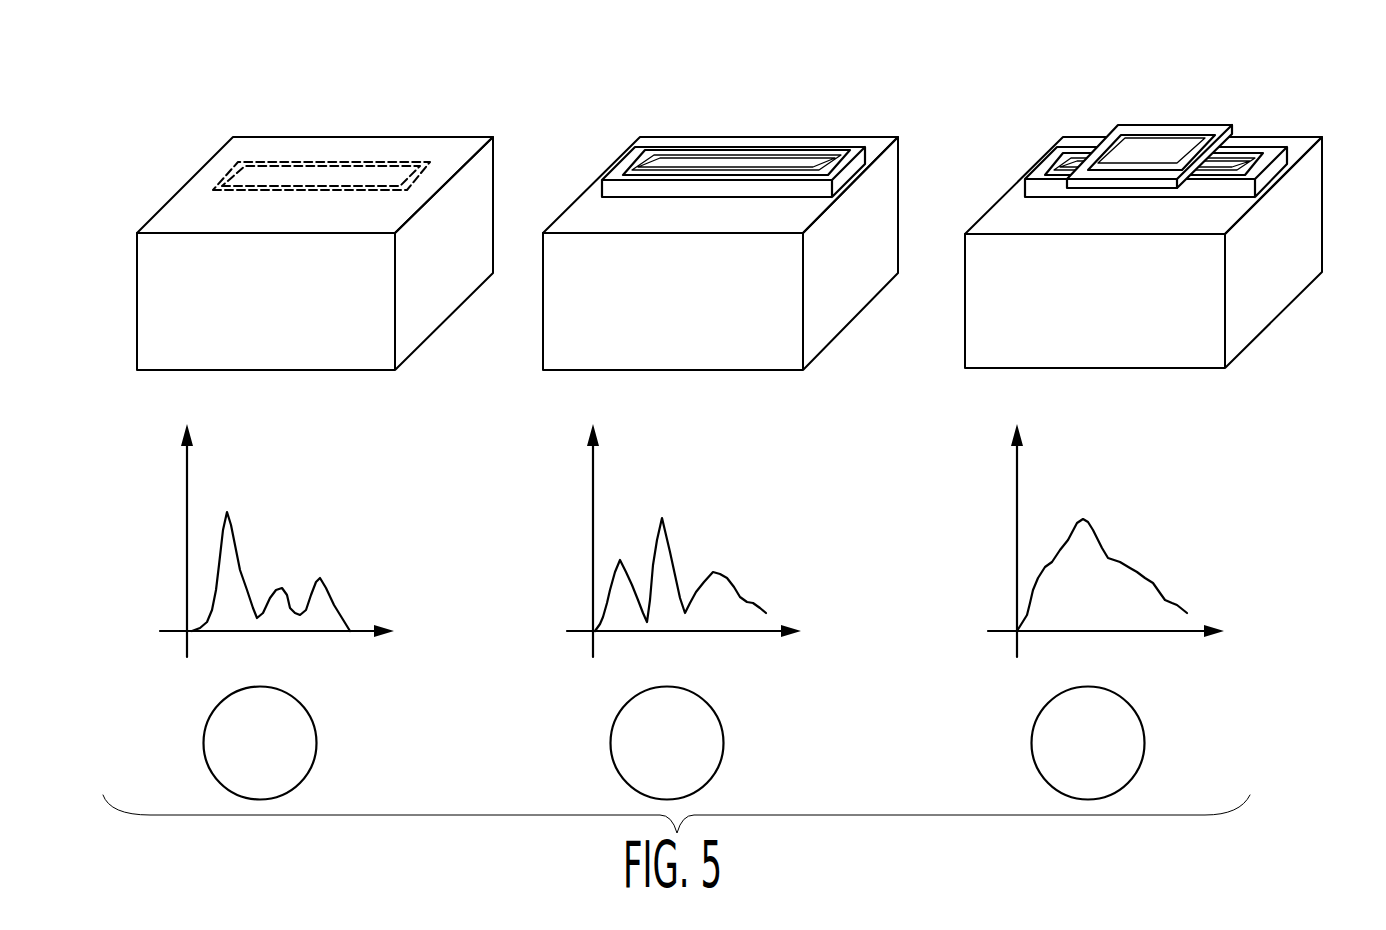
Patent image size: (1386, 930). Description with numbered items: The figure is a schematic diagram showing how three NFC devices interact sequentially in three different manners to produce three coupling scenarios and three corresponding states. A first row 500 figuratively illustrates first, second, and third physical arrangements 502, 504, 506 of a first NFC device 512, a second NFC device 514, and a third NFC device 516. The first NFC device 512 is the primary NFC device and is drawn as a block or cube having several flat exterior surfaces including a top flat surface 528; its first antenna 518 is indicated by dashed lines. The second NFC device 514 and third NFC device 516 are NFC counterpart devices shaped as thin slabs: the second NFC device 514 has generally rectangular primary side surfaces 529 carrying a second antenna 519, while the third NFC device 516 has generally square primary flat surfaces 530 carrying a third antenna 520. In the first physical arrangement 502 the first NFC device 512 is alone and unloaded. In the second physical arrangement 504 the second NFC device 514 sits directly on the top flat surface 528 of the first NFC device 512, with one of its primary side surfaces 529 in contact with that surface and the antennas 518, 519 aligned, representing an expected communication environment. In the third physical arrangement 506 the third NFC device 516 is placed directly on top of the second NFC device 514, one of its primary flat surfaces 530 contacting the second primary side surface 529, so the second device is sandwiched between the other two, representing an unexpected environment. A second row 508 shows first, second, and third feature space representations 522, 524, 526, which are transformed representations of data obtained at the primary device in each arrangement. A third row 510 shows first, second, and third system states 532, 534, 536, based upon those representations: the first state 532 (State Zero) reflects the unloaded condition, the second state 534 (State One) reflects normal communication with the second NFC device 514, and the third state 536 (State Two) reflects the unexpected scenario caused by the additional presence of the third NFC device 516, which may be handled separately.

The first row 500 is at (702, 429).
The first physical arrangement 502 is at (334, 133).
The second physical arrangement 504 is at (729, 119).
The third physical arrangement 506 is at (1169, 123).
The second row 508 is at (653, 534).
The third row 510 is at (665, 732).
The first NFC device 512 is at (290, 315).
The second NFC device 514 is at (608, 185).
The third NFC device 516 is at (1232, 127).
The first antenna 518 is at (380, 160).
The second antenna 519 is at (693, 153).
The third antenna 520 is at (1178, 130).
The first feature space representation 522 is at (277, 540).
The second feature space representation 524 is at (684, 540).
The third feature space representation 526 is at (1106, 540).
The top flat surface 528 is at (177, 213).
The primary side surfaces 529 is at (848, 150).
The primary flat surfaces 530 is at (1127, 127).
The first state 532 is at (302, 732).
The second state 534 is at (710, 732).
The third state 536 is at (1132, 732).